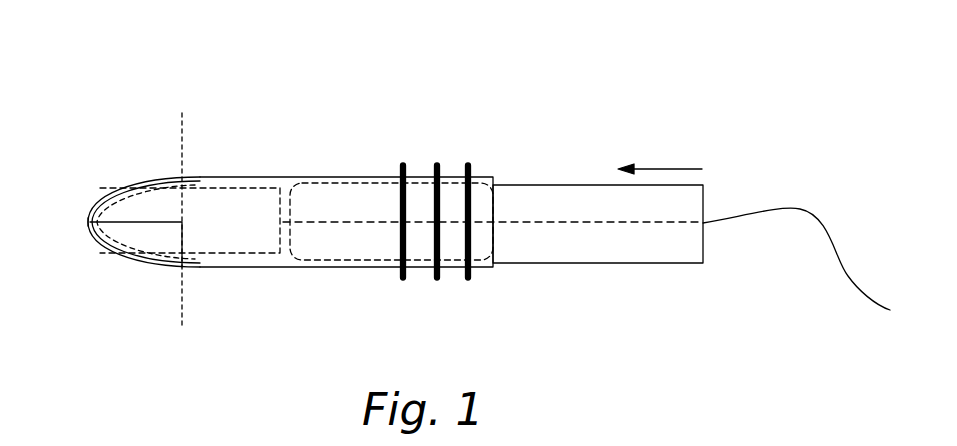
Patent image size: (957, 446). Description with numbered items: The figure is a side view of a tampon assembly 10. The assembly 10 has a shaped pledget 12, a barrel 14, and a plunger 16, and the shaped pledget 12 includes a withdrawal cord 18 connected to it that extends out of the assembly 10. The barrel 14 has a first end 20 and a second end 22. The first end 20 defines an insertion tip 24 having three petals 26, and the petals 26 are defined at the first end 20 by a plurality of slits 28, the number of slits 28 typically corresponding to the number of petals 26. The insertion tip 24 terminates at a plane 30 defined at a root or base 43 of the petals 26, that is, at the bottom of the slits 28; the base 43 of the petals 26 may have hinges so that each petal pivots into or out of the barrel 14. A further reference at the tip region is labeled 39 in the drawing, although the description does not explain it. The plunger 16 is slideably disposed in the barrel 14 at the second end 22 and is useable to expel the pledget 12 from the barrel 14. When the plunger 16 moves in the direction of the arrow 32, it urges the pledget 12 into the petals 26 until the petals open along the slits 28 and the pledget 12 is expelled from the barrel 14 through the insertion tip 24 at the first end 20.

The tampon assembly 10 is at (413, 118).
The shaped pledget 12 is at (228, 188).
The barrel 14 is at (225, 268).
The plunger 16 is at (622, 264).
The withdrawal cord 18 is at (848, 276).
The first end 20 is at (86, 212).
The second end 22 is at (493, 178).
The insertion tip 24 is at (118, 173).
The petals 26 is at (142, 235).
The slits 28 is at (170, 222).
The plane 30 is at (182, 312).
The arrow 32 is at (680, 168).
The tip point 39 is at (86, 222).
The base 43 is at (195, 177).